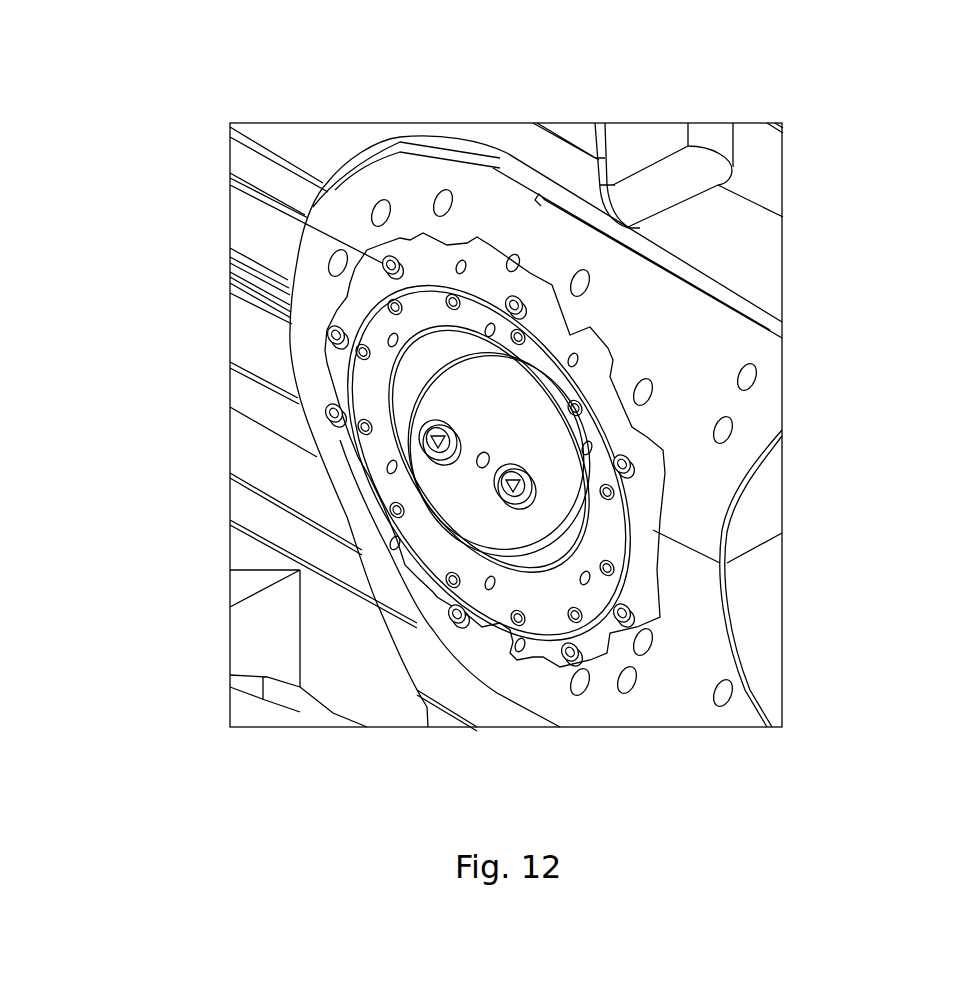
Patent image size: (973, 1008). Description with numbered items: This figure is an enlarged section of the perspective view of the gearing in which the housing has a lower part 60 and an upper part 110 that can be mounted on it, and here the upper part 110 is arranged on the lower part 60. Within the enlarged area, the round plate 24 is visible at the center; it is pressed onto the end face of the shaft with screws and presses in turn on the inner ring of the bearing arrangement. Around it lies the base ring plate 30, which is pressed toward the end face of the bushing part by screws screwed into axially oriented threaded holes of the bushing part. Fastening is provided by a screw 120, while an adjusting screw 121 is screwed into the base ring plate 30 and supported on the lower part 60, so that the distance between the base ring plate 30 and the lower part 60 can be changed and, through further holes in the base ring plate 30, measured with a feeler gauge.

The upper part 110 is at (767, 350).
The lower part 60 is at (766, 633).
The base ring plate 30 is at (368, 385).
The screw 120 is at (330, 333).
The adjusting screw 121 is at (508, 293).
The round plate 24 is at (475, 502).